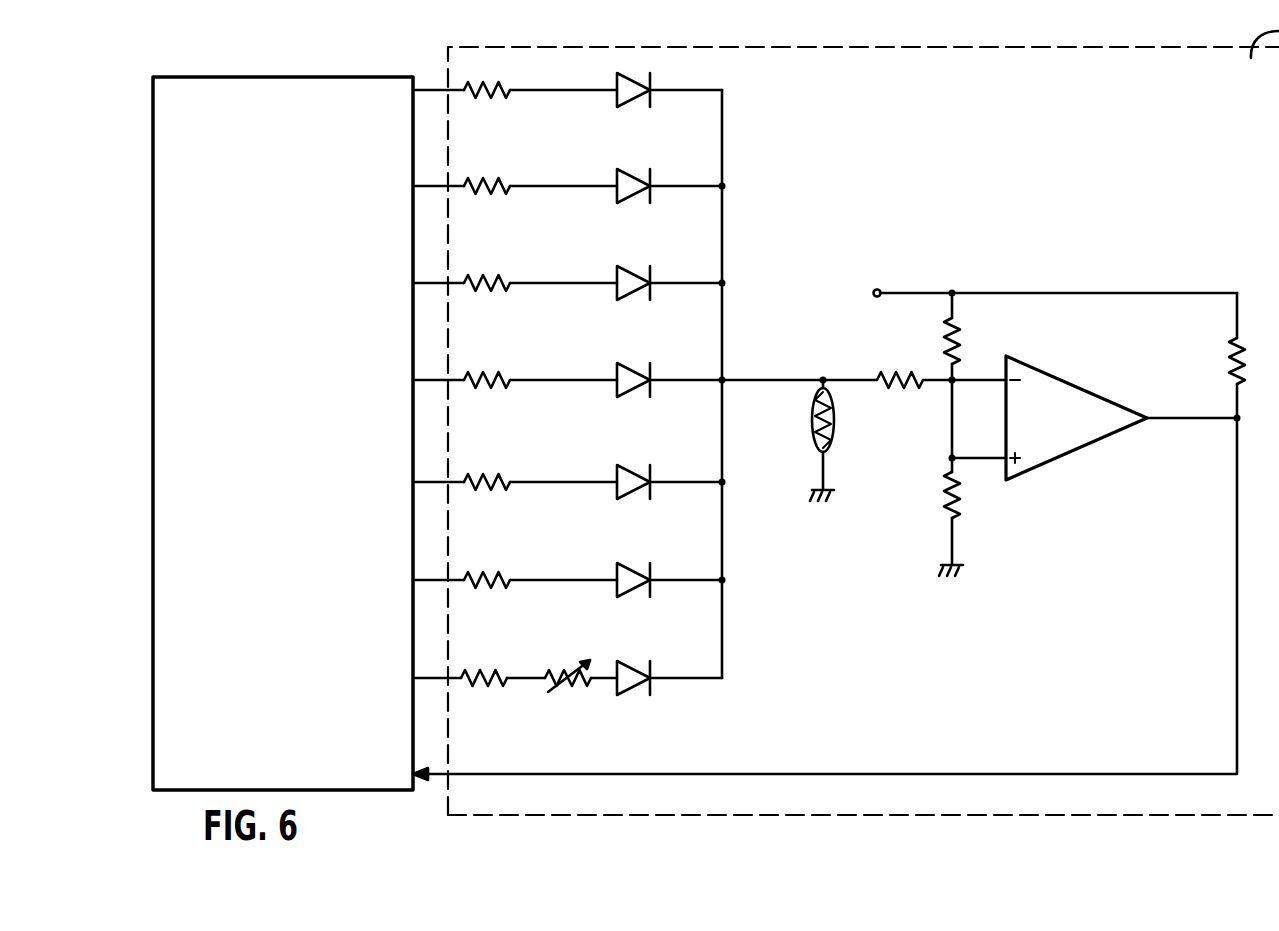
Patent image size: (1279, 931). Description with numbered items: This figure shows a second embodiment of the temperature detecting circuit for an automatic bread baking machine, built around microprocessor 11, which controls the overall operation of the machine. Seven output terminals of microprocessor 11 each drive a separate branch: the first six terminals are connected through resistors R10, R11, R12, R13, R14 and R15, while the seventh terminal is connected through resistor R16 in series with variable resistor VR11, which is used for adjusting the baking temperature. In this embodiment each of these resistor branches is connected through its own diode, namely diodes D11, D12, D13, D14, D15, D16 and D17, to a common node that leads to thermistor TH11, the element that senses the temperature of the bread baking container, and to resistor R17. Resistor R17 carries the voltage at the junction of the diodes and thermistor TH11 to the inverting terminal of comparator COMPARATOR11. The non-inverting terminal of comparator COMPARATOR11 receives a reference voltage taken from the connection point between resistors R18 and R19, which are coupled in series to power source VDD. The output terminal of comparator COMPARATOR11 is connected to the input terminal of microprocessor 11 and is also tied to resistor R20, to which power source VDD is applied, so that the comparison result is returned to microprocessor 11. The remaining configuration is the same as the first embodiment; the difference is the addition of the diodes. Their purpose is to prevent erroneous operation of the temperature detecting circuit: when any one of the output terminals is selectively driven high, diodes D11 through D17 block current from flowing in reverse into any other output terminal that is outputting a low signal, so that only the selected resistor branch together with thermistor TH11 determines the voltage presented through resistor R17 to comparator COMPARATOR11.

The microprocessor 11 is at (271, 87).
The resistor R10 is at (515, 78).
The resistor R11 is at (515, 174).
The resistor R12 is at (515, 271).
The resistor R13 is at (515, 368).
The resistor R14 is at (515, 470).
The resistor R15 is at (515, 568).
The resistor R16 is at (479, 666).
The variable resistor VR11 is at (581, 668).
The diode D11 is at (669, 106).
The diode D12 is at (669, 202).
The diode D13 is at (669, 299).
The diode D14 is at (669, 396).
The diode D15 is at (669, 498).
The diode D16 is at (669, 596).
The diode D17 is at (669, 694).
The thermistor TH11 is at (857, 440).
The resistor R17 is at (941, 368).
The resistor R18 is at (973, 375).
The resistor R19 is at (955, 517).
The resistor R20 is at (1214, 355).
The comparator COMPARATOR11 is at (1121, 433).
The power source VDD is at (1051, 280).